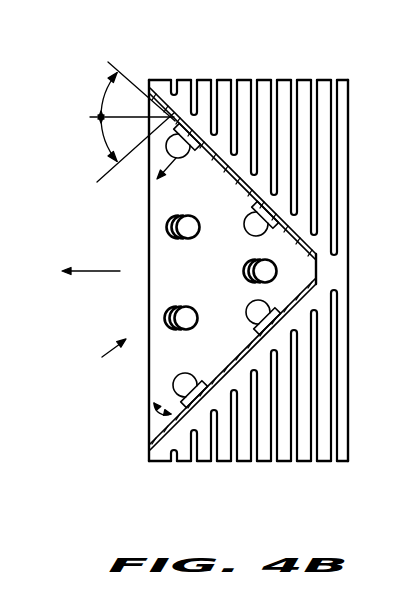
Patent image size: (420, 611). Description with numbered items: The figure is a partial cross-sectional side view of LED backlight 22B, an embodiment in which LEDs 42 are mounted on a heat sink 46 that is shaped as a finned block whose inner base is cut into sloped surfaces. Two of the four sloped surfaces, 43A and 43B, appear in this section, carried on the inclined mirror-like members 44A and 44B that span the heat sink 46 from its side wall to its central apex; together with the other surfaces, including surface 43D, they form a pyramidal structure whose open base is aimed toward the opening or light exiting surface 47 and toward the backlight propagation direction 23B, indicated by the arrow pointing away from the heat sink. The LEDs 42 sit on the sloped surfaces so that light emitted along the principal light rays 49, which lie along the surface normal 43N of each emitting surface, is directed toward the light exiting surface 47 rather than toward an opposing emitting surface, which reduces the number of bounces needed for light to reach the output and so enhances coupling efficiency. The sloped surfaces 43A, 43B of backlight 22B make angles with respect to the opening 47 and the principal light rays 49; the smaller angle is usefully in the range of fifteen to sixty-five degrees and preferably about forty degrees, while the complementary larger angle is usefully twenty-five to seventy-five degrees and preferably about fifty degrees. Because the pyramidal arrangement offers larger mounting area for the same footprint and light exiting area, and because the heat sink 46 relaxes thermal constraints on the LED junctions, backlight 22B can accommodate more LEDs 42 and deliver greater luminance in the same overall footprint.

The LED backlight 22B is at (190, 61).
The heat sink 46 is at (287, 80).
The sloped surface 43D is at (158, 257).
The first mirror 44A is at (153, 90).
The second mirror 44B is at (153, 450).
The sloped surface 43A is at (232, 172).
The sloped surface 43B is at (229, 366).
The LEDs 42 is at (256, 306).
The principal light rays 49 is at (172, 184).
The surface normal 43N is at (114, 159).
The backlight propagation direction 23B is at (97, 271).
The opening or light exiting surface 47 is at (99, 360).